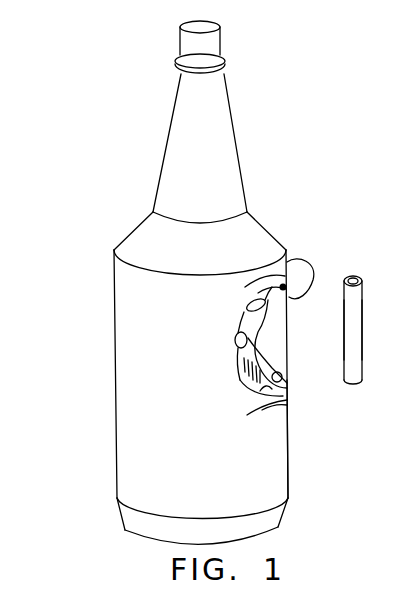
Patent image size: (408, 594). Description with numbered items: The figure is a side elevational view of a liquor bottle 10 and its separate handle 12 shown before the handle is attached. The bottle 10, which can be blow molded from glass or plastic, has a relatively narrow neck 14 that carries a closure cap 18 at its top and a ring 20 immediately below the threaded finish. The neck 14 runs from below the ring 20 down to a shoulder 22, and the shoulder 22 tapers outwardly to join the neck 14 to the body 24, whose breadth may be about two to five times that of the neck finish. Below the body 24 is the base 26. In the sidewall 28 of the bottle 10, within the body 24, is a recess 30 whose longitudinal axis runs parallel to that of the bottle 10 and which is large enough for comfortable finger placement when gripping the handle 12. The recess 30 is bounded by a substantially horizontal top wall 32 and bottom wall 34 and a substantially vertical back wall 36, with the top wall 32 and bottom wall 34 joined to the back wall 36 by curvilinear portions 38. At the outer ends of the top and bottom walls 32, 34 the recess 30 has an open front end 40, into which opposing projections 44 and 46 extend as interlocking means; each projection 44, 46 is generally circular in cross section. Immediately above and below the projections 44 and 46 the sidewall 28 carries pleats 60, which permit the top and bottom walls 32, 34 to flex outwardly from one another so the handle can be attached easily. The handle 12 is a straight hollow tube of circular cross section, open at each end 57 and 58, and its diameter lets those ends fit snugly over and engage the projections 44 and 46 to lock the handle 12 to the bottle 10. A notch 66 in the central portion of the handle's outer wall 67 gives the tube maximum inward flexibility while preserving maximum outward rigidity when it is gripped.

The liquor bottle 10 is at (137, 152).
The handle 12 is at (367, 397).
The neck 14 is at (241, 171).
The closure cap 18 is at (179, 47).
The ring 20 is at (228, 63).
The shoulder 22 is at (137, 227).
The body 24 is at (185, 482).
The base 26 is at (122, 527).
The sidewall 28 is at (289, 451).
The recess 30 is at (257, 338).
The top wall 32 is at (246, 305).
The bottom wall 34 is at (250, 402).
The back wall 36 is at (235, 342).
The curvilinear portions 38 is at (240, 315).
The open front end 40 is at (280, 334).
The projection 44 is at (289, 297).
The projection 46 is at (287, 390).
The end 57 is at (353, 275).
The end 58 is at (364, 373).
The pleats 60 is at (289, 294).
The notch 66 is at (362, 328).
The outer wall 67 is at (363, 297).